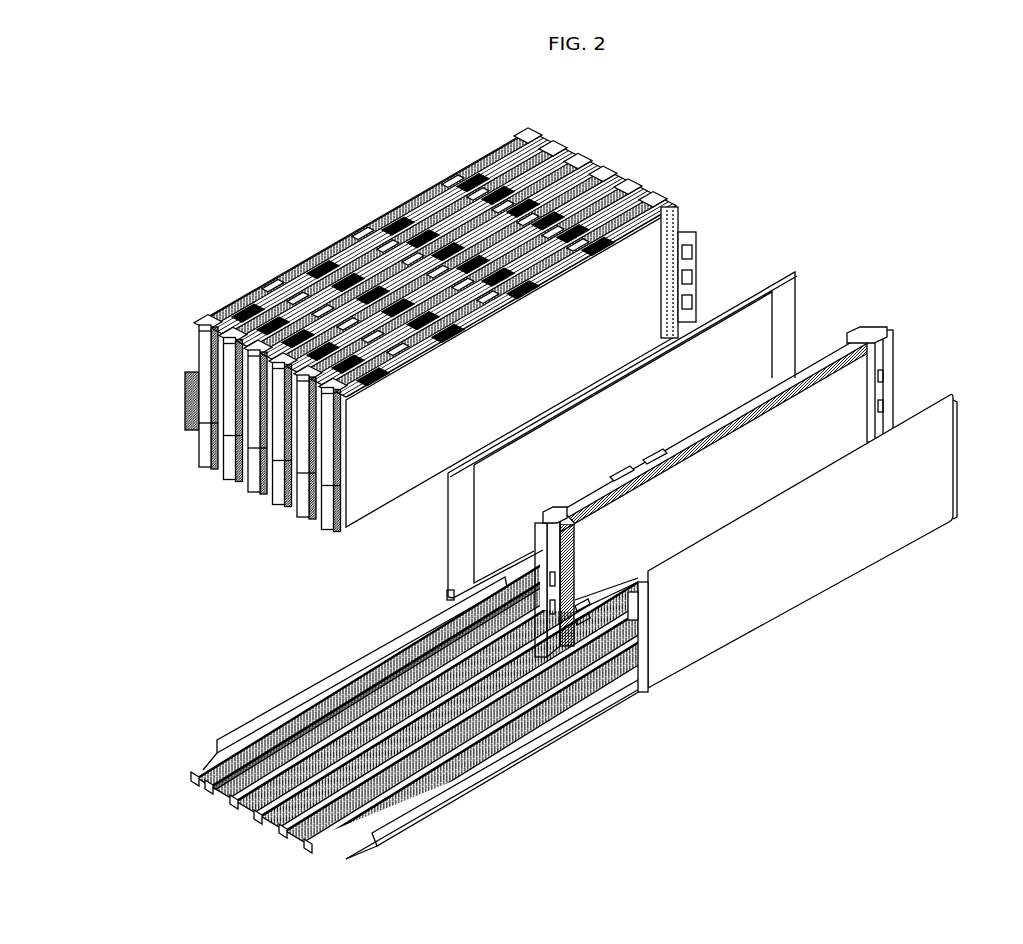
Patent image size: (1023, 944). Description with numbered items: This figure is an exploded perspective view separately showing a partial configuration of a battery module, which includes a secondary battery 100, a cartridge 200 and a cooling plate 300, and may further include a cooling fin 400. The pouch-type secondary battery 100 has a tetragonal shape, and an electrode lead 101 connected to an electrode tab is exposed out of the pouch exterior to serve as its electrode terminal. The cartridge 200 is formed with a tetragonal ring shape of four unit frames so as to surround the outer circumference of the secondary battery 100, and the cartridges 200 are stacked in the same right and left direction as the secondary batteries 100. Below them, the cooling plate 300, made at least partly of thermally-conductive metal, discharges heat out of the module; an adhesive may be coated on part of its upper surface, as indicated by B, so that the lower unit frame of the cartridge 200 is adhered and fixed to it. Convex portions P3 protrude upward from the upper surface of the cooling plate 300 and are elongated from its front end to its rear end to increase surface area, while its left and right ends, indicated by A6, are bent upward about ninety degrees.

The secondary battery 100 is at (803, 283).
The electrode lead 101 is at (196, 402).
The cartridge 200 is at (891, 330).
The cooling plate 300 is at (486, 678).
The cooling fin 400 is at (960, 401).
The bent left and right ends of the cooling plate A6 is at (298, 705).
The adhesive-coated portion of the cooling plate upper surface B is at (268, 735).
The convex portion P3 is at (252, 812).